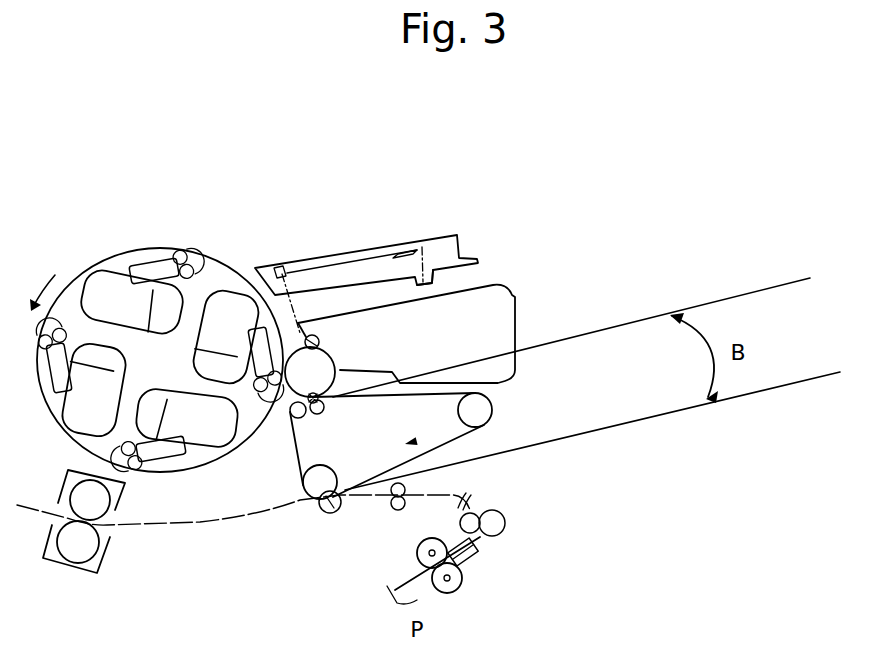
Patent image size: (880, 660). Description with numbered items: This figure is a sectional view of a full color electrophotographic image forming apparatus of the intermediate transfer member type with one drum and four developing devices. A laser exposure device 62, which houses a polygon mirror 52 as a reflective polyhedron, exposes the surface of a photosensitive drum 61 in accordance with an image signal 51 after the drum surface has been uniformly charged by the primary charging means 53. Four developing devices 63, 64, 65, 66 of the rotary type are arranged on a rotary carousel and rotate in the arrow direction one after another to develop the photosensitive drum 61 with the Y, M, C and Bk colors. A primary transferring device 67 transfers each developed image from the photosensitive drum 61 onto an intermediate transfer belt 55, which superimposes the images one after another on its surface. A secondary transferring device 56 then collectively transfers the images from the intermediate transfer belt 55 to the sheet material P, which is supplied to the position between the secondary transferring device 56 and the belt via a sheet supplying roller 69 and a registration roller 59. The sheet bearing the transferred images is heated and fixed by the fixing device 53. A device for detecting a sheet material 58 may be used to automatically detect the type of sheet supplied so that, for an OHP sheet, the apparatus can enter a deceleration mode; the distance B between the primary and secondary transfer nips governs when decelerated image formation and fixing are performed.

The image signal 51 is at (463, 242).
The polygon mirror 52 is at (430, 243).
The primary charging means 53 is at (322, 333).
The intermediate transfer belt 55 is at (297, 462).
The secondary transferring device 56 is at (330, 512).
The device for detecting a sheet material 58 is at (483, 552).
The registration roller 59 is at (398, 511).
The photosensitive drum 61 is at (323, 367).
The laser exposure device 62 is at (353, 247).
The developing device 63 is at (228, 298).
The developing device 64 is at (212, 463).
The developing device 65 is at (75, 412).
The developing device 66 is at (108, 282).
The primary transferring device 67 is at (327, 417).
The sheet supplying roller 69 is at (452, 587).